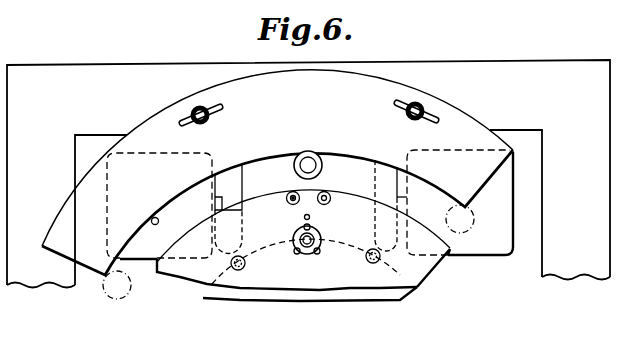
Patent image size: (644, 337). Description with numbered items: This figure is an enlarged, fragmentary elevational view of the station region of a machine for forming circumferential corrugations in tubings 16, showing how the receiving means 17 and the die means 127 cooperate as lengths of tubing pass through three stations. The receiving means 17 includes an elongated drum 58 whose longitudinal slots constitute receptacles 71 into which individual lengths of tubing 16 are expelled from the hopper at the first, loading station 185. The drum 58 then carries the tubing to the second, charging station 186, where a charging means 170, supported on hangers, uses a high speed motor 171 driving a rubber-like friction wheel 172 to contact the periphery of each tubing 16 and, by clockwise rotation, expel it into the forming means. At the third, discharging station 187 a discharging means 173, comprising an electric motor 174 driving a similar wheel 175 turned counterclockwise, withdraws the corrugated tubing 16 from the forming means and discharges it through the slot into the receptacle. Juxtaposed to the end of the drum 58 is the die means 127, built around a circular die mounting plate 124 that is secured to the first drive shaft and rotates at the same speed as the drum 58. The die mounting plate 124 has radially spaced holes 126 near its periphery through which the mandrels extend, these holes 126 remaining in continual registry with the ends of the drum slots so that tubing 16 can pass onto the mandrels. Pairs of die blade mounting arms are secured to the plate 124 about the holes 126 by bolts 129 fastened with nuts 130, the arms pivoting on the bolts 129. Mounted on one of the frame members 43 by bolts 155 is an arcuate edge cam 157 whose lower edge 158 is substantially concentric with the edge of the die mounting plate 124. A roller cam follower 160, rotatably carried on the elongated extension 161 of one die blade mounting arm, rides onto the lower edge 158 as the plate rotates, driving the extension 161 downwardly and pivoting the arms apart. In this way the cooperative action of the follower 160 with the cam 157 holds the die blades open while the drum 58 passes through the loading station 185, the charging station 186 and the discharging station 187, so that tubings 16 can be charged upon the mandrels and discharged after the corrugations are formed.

The frame member 43 is at (402, 64).
The bolts 155 is at (191, 111).
The arcuate edge cam 157 is at (80, 207).
The electric motor 174 is at (175, 210).
The discharging means 173 is at (148, 264).
The lower edge 158 is at (152, 218).
The roller cam follower 160 is at (105, 292).
The charging means 170 is at (486, 259).
The motor 171 is at (432, 198).
The wheel 172 is at (386, 160).
The wheel 175 is at (228, 162).
The elongated extension 161 is at (326, 170).
The die means 127 is at (340, 160).
The bolts 129 is at (290, 192).
The nuts 130 is at (287, 201).
The tubings 16 is at (295, 237).
The receptacles 71 is at (322, 236).
The loading station 185 is at (302, 252).
The holes 126 is at (320, 251).
The receiving means 17 is at (209, 293).
The die mounting plate 124 is at (315, 288).
The drum 58 is at (424, 281).
The discharging station 187 is at (238, 271).
The charging station 186 is at (375, 264).